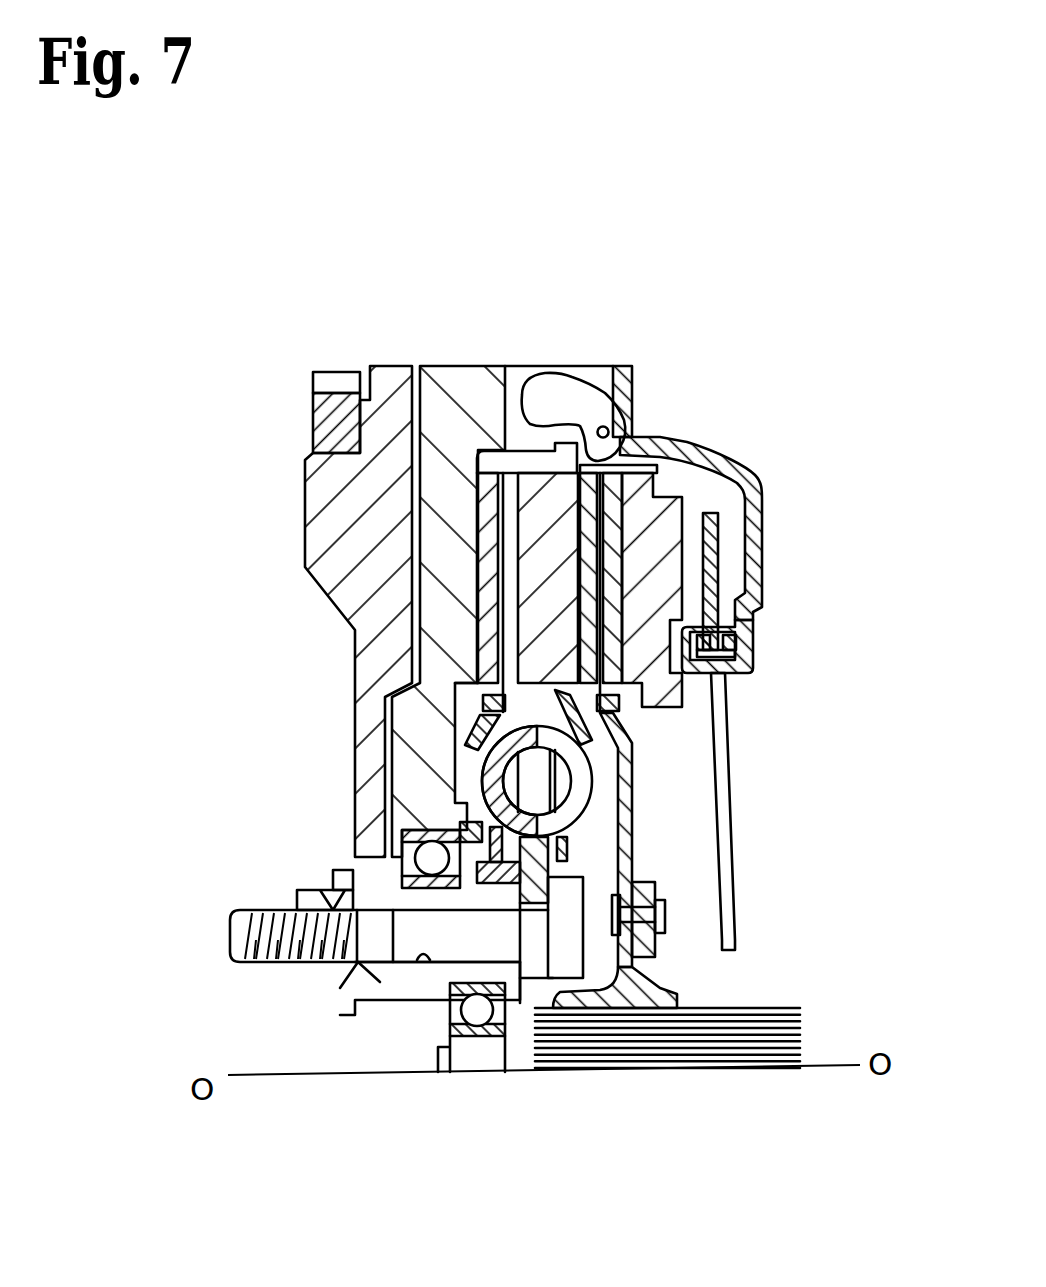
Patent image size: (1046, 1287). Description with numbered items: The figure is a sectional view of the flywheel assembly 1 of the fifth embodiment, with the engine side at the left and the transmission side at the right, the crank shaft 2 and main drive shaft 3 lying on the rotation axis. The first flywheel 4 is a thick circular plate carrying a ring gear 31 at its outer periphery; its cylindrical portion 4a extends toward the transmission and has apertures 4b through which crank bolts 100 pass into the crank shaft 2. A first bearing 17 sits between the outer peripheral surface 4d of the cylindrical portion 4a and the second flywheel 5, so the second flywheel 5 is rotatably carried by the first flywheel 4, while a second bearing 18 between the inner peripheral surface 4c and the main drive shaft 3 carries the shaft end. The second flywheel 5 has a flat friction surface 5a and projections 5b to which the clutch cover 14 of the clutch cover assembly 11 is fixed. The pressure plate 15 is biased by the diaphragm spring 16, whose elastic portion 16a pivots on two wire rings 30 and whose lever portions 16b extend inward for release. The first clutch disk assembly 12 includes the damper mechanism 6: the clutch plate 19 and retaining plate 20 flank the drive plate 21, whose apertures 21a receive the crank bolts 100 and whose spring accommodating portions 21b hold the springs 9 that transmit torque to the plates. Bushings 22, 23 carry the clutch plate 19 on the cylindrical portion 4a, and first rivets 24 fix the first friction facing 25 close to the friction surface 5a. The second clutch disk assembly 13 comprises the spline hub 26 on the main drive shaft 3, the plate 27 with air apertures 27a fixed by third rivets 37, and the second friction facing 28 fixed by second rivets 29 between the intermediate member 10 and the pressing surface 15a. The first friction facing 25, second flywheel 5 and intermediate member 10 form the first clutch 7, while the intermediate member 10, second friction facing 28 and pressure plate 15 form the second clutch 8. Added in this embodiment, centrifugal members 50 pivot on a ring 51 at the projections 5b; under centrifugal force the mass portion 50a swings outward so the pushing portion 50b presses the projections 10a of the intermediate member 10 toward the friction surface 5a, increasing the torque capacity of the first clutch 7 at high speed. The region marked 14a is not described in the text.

The flywheel assembly 1 is at (712, 278).
The crank shaft 2 is at (317, 898).
The main drive shaft 3 is at (747, 1006).
The first flywheel 4 is at (358, 598).
The cylindrical portion 4a is at (520, 1040).
The apertures 4b is at (432, 956).
The inner peripheral surface 4c is at (520, 962).
The outer peripheral surface 4d is at (360, 870).
The second flywheel 5 is at (435, 533).
The friction surface 5a is at (475, 497).
The projections 5b is at (595, 377).
The damper mechanism 6 is at (593, 822).
The first clutch 7 is at (490, 440).
The second clutch 8 is at (627, 468).
The springs 9 is at (583, 780).
The intermediate member 10 is at (540, 500).
The projections 10a is at (530, 420).
The clutch cover assembly 11 is at (790, 434).
The first clutch disk assembly 12 is at (452, 742).
The second clutch disk assembly 13 is at (668, 892).
The clutch cover 14 is at (758, 510).
The housing wall bottom 14a is at (725, 683).
The pressure plate 15 is at (703, 500).
The pressing surface 15a is at (745, 480).
The diaphragm spring 16 is at (720, 712).
The elastic portion 16a is at (716, 557).
The lever portions 16b is at (733, 830).
The first bearing 17 is at (400, 856).
The second bearing 18 is at (440, 1022).
The clutch plate 19 is at (466, 732).
The retaining plate 20 is at (567, 852).
The drive plate 21 is at (545, 872).
The apertures 21a is at (578, 1066).
The spring accommodating portions 21b is at (540, 775).
The bushing 22 is at (462, 832).
The bushing 23 is at (492, 898).
The first rivets 24 is at (478, 703).
The first friction facing 25 is at (450, 622).
The spline hub 26 is at (640, 975).
The plate 27 is at (626, 870).
The apertures 27a is at (626, 805).
The second friction facing 28 is at (656, 525).
The second rivets 29 is at (620, 712).
The wire rings 30 is at (706, 633).
The ring gear 31 is at (327, 408).
The third rivets 37 is at (663, 921).
The centrifugal members 50 is at (595, 376).
The mass portion 50a is at (532, 380).
The pushing portion 50b is at (605, 382).
The ring 51 is at (622, 415).
The crank bolts 100 is at (277, 937).